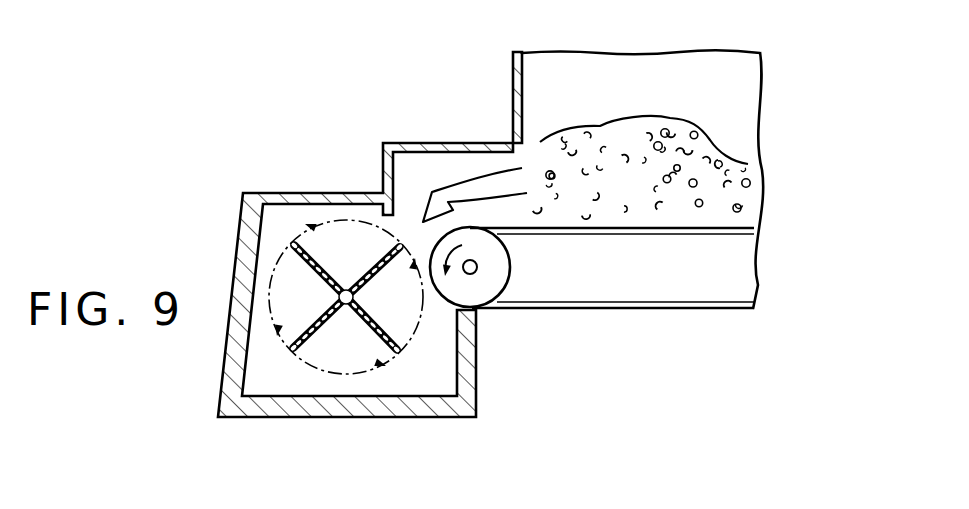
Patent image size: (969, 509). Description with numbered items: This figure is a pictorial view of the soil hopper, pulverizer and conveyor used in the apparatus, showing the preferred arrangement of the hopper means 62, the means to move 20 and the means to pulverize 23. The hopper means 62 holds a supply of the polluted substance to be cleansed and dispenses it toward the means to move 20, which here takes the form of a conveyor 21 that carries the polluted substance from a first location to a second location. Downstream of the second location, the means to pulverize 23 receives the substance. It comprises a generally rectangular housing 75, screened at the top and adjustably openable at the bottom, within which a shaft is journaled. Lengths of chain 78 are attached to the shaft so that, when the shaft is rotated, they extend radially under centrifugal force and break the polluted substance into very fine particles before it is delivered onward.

The means for moving 20 is at (660, 314).
The conveyor 21 is at (553, 311).
The means to pulverize 23 is at (226, 257).
The hopper means 62 is at (684, 40).
The housing 75 is at (273, 220).
The lengths of chain 78 is at (377, 258).